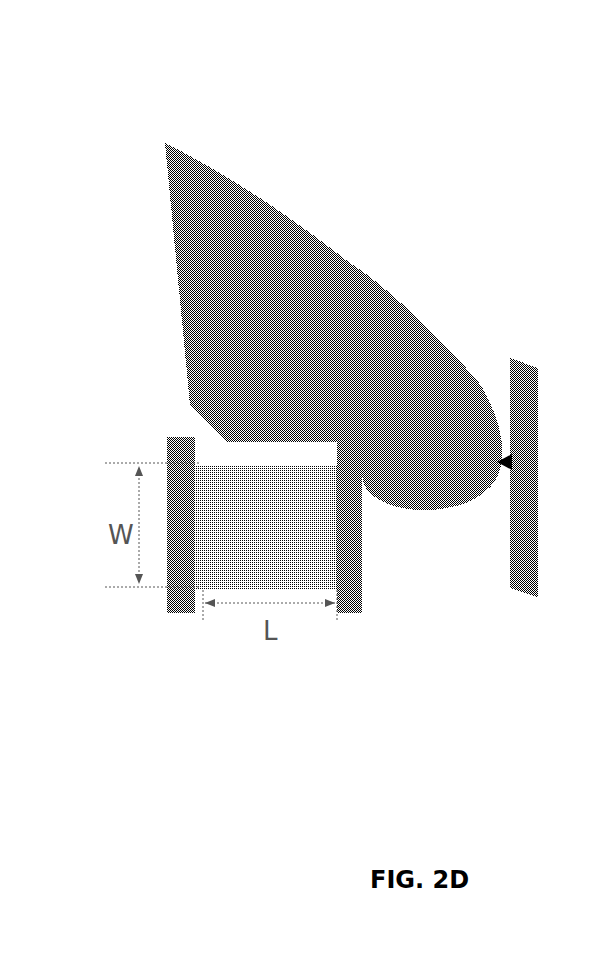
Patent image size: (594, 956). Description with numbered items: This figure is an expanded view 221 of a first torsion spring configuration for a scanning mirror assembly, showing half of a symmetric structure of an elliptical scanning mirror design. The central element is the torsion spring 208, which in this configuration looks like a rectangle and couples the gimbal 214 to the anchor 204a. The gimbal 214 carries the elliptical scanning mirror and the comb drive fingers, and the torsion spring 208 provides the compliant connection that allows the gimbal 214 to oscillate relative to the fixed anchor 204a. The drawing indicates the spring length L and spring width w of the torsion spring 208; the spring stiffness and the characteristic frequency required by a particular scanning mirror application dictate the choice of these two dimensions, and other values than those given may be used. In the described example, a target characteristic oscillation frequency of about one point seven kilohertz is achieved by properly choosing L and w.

The expanded view 221 is at (130, 30).
The torsion spring 208 is at (289, 544).
The gimbal 214 is at (170, 486).
The anchor 204a is at (349, 586).